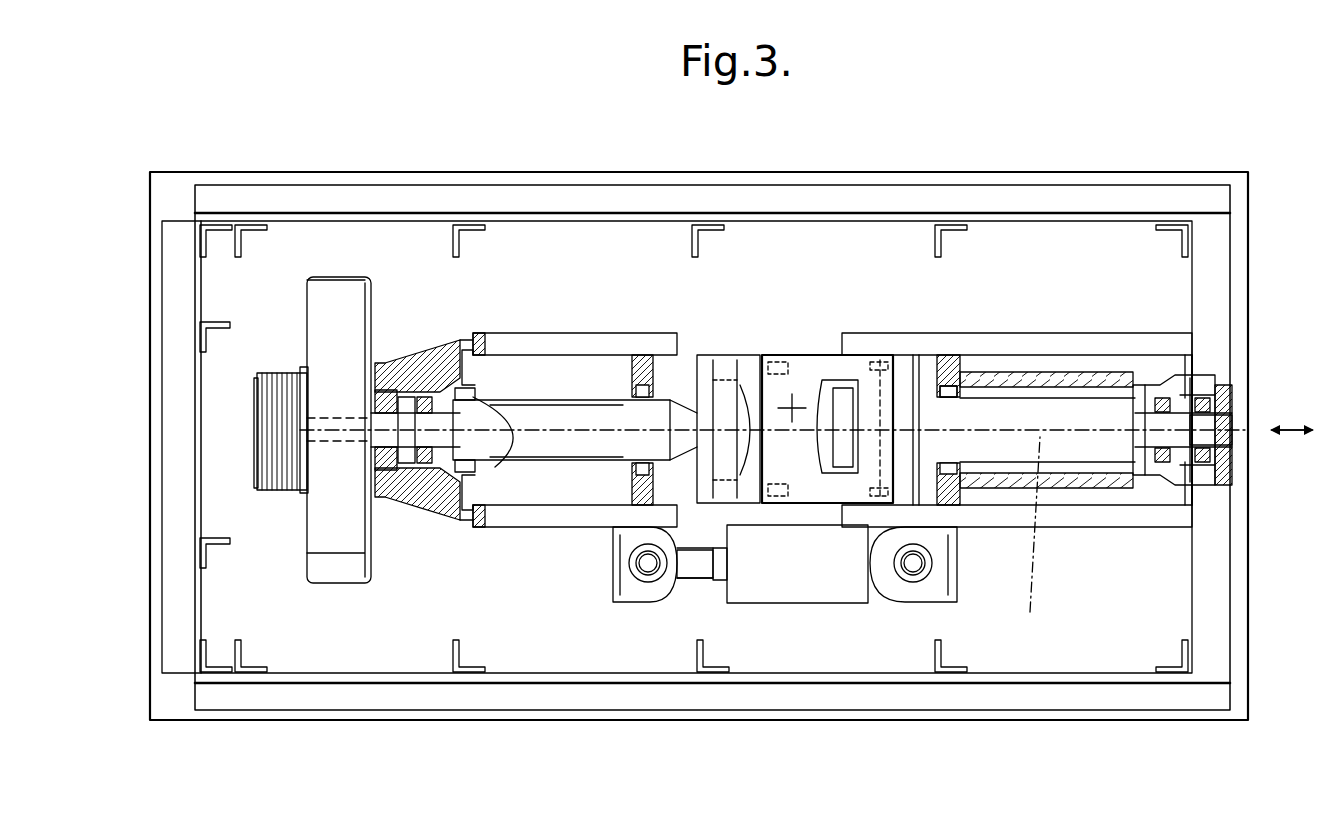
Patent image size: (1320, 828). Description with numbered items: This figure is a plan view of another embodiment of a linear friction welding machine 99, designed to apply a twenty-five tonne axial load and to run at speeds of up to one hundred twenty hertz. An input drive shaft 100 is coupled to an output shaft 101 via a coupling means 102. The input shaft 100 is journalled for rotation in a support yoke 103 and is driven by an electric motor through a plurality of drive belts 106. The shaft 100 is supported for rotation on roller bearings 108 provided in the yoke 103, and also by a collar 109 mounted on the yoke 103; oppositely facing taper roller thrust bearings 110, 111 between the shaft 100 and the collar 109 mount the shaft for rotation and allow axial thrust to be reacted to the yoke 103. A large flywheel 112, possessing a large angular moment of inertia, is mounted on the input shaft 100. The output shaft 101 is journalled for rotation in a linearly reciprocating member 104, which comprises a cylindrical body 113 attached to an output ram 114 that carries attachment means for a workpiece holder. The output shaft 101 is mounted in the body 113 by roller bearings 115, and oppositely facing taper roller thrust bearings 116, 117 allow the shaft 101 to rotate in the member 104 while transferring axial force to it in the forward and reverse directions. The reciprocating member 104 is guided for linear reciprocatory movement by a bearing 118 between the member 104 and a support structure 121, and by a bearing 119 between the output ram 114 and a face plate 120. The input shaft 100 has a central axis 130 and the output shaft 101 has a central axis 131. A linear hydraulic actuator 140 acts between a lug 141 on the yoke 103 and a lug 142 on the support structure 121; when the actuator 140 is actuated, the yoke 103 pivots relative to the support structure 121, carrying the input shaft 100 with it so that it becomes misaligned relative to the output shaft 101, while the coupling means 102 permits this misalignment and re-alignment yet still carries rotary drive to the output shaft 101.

The linear friction welding machine 99 is at (460, 316).
The input drive shaft 100 is at (550, 417).
The output shaft 101 is at (1068, 440).
The coupling means 102 is at (802, 340).
The support yoke 103 is at (582, 352).
The linearly reciprocating member 104 is at (1075, 368).
The drive belts 106 is at (277, 373).
The roller bearings 108 is at (507, 390).
The collar 109 is at (448, 380).
The taper roller thrust bearing 110 is at (434, 435).
The taper roller thrust bearing 111 is at (397, 402).
The flywheel 112 is at (338, 567).
The cylindrical body 113 is at (1133, 372).
The output ram 114 is at (1232, 418).
The roller bearings 115 is at (955, 400).
The taper roller thrust bearing 116 is at (1187, 373).
The taper roller thrust bearing 117 is at (1233, 388).
The bearing 118 is at (942, 355).
The bearing 119 is at (1214, 465).
The face plate 120 is at (1220, 614).
The support structure 121 is at (1035, 372).
The central axis 130 is at (600, 430).
The central axis 131 is at (1036, 541).
The linear hydraulic actuator 140 is at (830, 585).
The lug 141 is at (636, 603).
The lug 142 is at (928, 597).